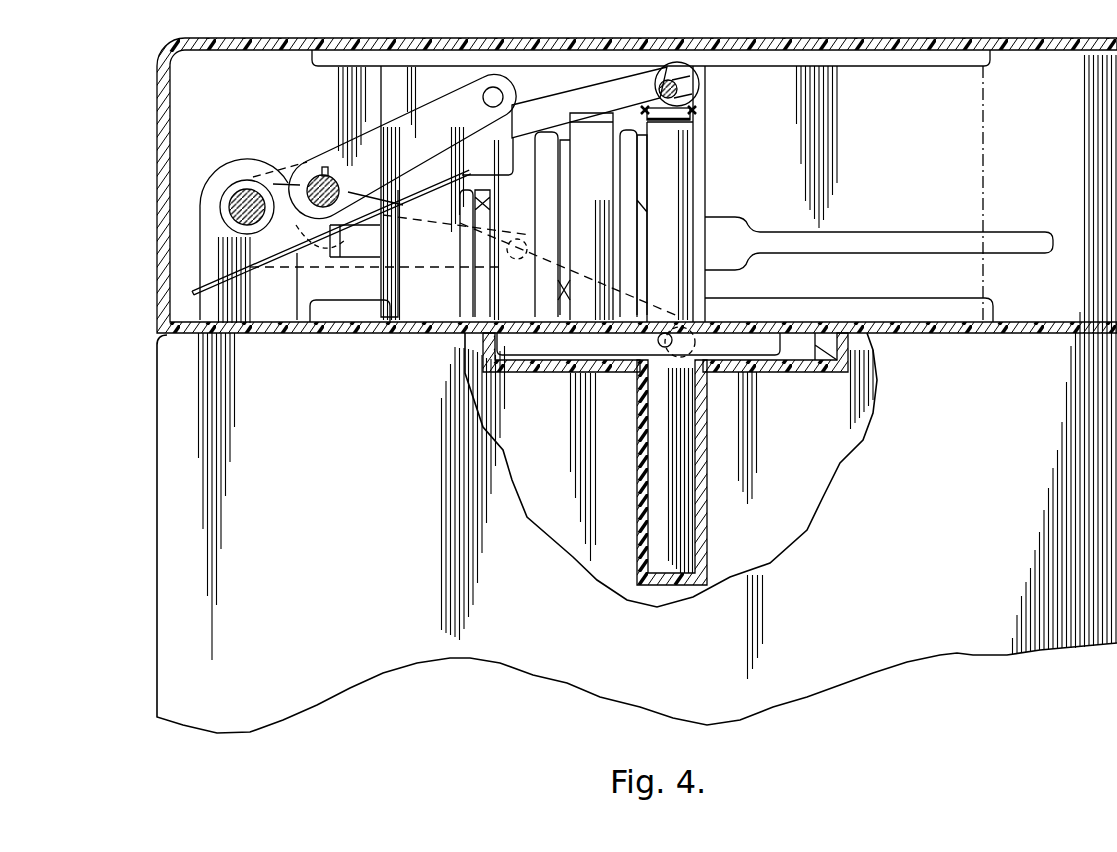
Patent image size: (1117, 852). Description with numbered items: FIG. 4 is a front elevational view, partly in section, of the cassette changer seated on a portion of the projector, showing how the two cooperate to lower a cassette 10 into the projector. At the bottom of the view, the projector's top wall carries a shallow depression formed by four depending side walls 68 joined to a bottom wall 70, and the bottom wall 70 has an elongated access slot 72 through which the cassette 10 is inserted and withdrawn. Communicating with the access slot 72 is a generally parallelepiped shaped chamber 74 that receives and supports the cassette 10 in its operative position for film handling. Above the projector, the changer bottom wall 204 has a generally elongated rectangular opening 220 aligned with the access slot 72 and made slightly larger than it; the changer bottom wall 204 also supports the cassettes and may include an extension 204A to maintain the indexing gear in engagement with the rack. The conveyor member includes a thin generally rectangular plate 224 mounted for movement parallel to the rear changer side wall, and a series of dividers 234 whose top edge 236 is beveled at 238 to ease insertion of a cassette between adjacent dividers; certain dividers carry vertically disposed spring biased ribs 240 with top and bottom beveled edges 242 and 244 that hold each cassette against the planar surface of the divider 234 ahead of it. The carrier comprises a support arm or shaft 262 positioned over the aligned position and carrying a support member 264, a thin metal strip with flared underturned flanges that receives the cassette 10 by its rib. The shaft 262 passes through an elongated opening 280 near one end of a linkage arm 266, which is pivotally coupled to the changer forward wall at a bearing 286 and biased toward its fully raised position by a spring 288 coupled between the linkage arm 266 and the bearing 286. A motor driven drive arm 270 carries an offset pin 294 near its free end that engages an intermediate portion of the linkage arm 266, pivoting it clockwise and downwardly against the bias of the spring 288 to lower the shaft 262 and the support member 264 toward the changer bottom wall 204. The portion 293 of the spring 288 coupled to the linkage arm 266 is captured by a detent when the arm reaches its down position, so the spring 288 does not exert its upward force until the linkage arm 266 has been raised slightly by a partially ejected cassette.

The cassette 10 is at (670, 197).
The depending side walls 68 is at (883, 345).
The bottom wall 70 is at (537, 372).
The access slot 72 is at (668, 366).
The chamber 74 is at (680, 532).
The changer bottom wall 204 is at (312, 335).
The extension 204A is at (762, 215).
The opening 220 is at (700, 308).
The plate 224 is at (393, 97).
The divider 234 is at (623, 270).
The top edge 236 is at (595, 121).
The bevel 238 is at (628, 132).
The spring biased ribs 240 is at (560, 220).
The top beveled edge 242 is at (560, 183).
The bottom beveled edge 244 is at (563, 287).
The support arm or shaft 262 is at (657, 80).
The support member 264 is at (697, 117).
The linkage arm 266 is at (318, 157).
The drive arm 270 is at (443, 118).
The elongated opening 280 is at (700, 78).
The bearing 286 is at (212, 303).
The spring 288 is at (222, 188).
The portion of spring 293 is at (262, 172).
The offset pin 294 is at (498, 90).